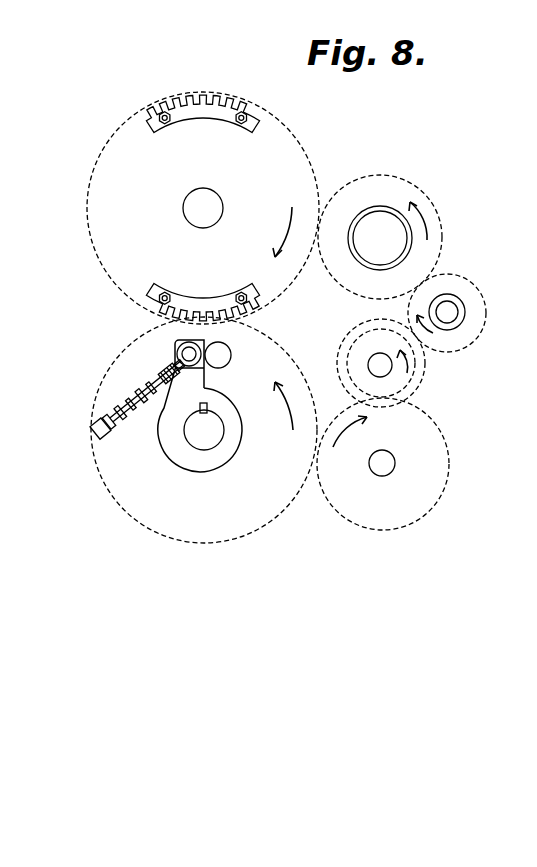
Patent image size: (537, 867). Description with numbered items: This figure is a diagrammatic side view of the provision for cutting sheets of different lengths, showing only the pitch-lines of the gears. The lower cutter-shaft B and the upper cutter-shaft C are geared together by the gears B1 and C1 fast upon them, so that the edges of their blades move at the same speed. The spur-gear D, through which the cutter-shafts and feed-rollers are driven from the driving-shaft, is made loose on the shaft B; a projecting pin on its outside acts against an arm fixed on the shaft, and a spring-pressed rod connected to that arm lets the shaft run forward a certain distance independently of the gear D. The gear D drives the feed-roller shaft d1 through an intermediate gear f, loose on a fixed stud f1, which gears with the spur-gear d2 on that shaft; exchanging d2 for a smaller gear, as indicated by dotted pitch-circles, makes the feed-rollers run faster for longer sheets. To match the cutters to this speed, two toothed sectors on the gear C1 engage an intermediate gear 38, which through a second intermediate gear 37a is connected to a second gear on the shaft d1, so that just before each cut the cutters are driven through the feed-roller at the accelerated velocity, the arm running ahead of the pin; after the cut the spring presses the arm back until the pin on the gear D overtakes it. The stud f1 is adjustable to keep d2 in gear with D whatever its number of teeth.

The upper cutter-shaft C is at (203, 208).
The gear on upper cutter-shaft C1 is at (97, 203).
The intermediate gear 38 is at (380, 232).
The intermediate gear 37a is at (451, 306).
The spur-gear of feed-roller shaft d2 is at (415, 370).
The feed-roller shaft d1 is at (375, 365).
The intermediate gear f is at (423, 517).
The fixed stud f1 is at (382, 467).
The spur-gear D is at (204, 430).
The gear on lower cutter-shaft B1 is at (141, 521).
The lower cutter-shaft B is at (200, 406).